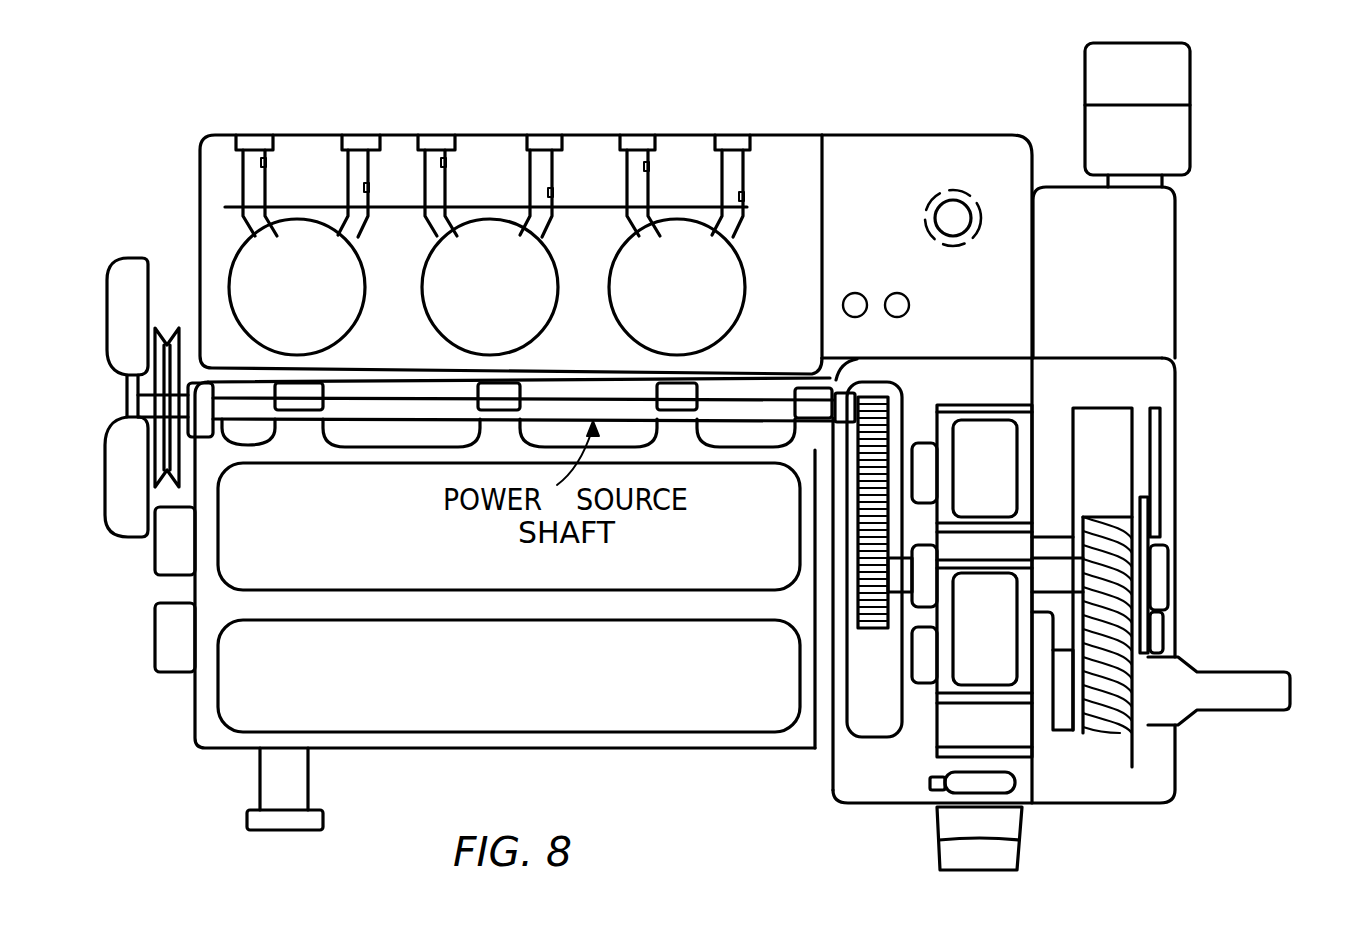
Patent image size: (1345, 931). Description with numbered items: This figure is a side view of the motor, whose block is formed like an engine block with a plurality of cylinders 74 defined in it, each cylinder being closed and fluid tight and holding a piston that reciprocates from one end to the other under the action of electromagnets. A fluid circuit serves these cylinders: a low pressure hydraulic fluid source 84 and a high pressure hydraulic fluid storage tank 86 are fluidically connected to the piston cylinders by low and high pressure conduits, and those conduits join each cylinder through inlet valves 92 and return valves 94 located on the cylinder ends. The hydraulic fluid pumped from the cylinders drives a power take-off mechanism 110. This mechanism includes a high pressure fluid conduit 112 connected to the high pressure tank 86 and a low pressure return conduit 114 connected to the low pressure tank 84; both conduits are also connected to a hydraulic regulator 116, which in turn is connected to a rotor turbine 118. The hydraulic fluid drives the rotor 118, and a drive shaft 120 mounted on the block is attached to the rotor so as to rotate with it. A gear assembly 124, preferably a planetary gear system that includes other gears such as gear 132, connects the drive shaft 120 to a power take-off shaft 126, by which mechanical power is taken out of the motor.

The cylinder 74 is at (345, 312).
The low pressure hydraulic fluid source 84 is at (350, 695).
The high pressure hydraulic fluid storage tank 86 is at (352, 527).
The inlet valve 92 is at (250, 172).
The return valve 94 is at (365, 162).
The power take-off mechanism 110 is at (1192, 582).
The high pressure fluid conduit 112 is at (858, 317).
The low pressure return conduit 114 is at (905, 314).
The hydraulic regulator 116 is at (878, 142).
The rotor turbine 118 is at (1007, 730).
The drive shaft 120 is at (1057, 563).
The gear assembly 124 is at (1167, 543).
The power take-off shaft 126 is at (1225, 688).
The gear 132 is at (1103, 725).